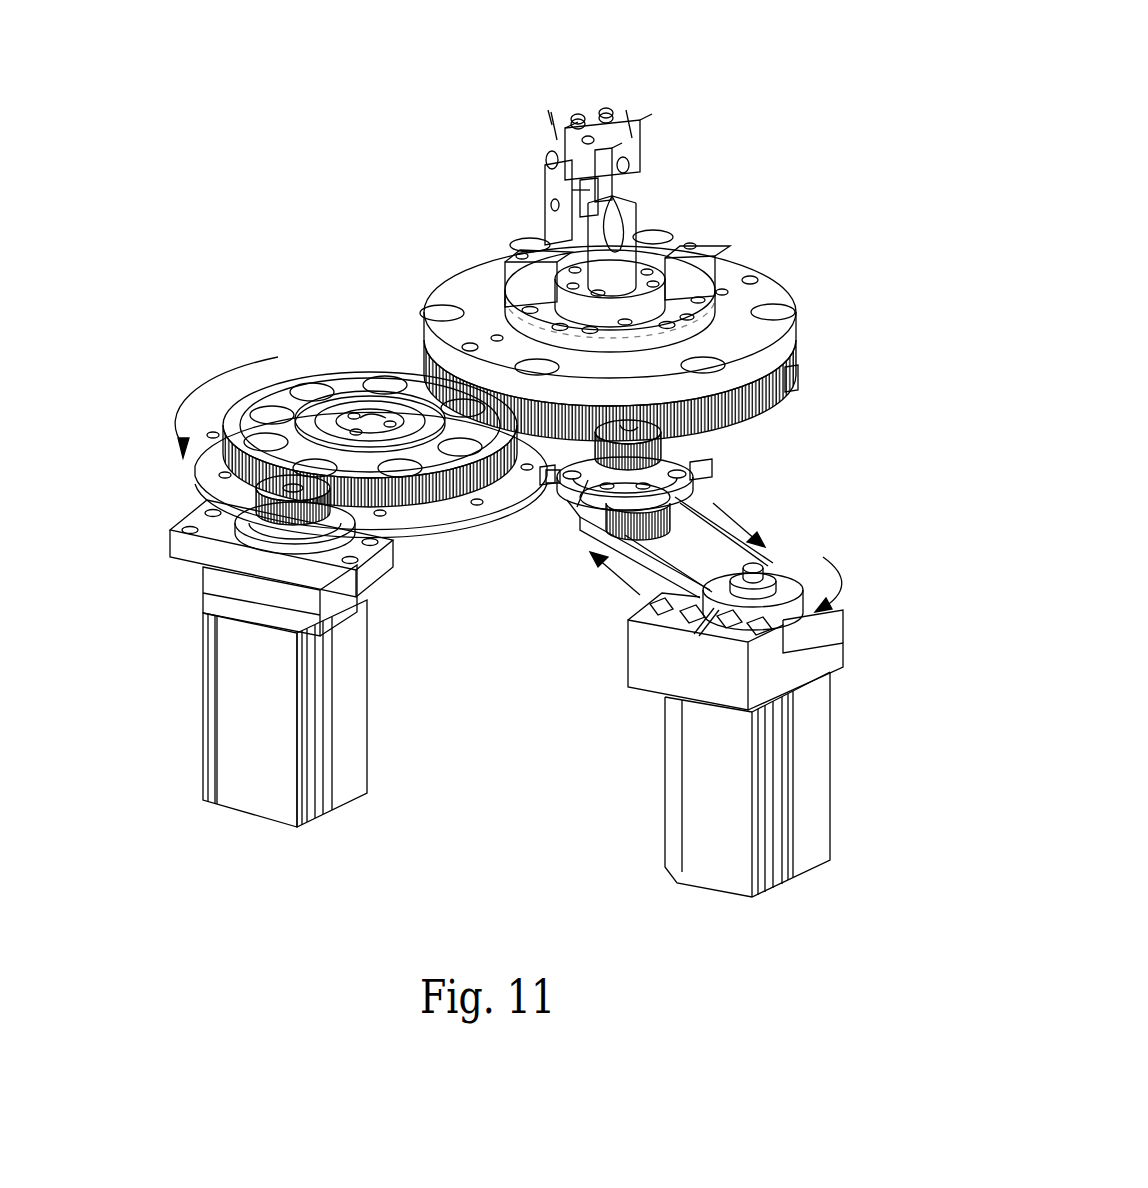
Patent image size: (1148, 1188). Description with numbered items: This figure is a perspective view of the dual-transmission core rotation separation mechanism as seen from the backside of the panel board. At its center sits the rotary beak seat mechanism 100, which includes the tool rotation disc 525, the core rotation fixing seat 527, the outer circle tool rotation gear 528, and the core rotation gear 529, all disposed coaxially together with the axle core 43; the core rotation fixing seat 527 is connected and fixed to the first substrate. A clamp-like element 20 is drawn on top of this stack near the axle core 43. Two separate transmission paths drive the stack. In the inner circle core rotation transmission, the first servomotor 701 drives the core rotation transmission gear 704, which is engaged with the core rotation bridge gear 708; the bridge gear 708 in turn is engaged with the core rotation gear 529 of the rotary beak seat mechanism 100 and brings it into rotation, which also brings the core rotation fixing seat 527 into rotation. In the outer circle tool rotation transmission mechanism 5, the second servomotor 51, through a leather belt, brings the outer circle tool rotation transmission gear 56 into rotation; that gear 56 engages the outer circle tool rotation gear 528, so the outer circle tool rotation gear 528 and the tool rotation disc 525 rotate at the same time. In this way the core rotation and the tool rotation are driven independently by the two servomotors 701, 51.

The rotary beak seat mechanism 100 is at (572, 105).
The clamping assembly 20 is at (627, 145).
The axle core 43 is at (620, 235).
The tool rotation disc 525 is at (717, 288).
The core rotation fixing seat 527 is at (778, 328).
The outer circle tool rotation gear 528 is at (795, 367).
The core rotation gear 529 is at (727, 435).
The core rotation bridge gear 708 is at (345, 383).
The core rotation transmission gear 704 is at (243, 492).
The first servomotor 701 is at (255, 745).
The outer circle tool rotation transmission mechanism 5 is at (773, 550).
The outer circle tool rotation transmission gear 56 is at (598, 465).
The second servomotor 51 is at (735, 797).